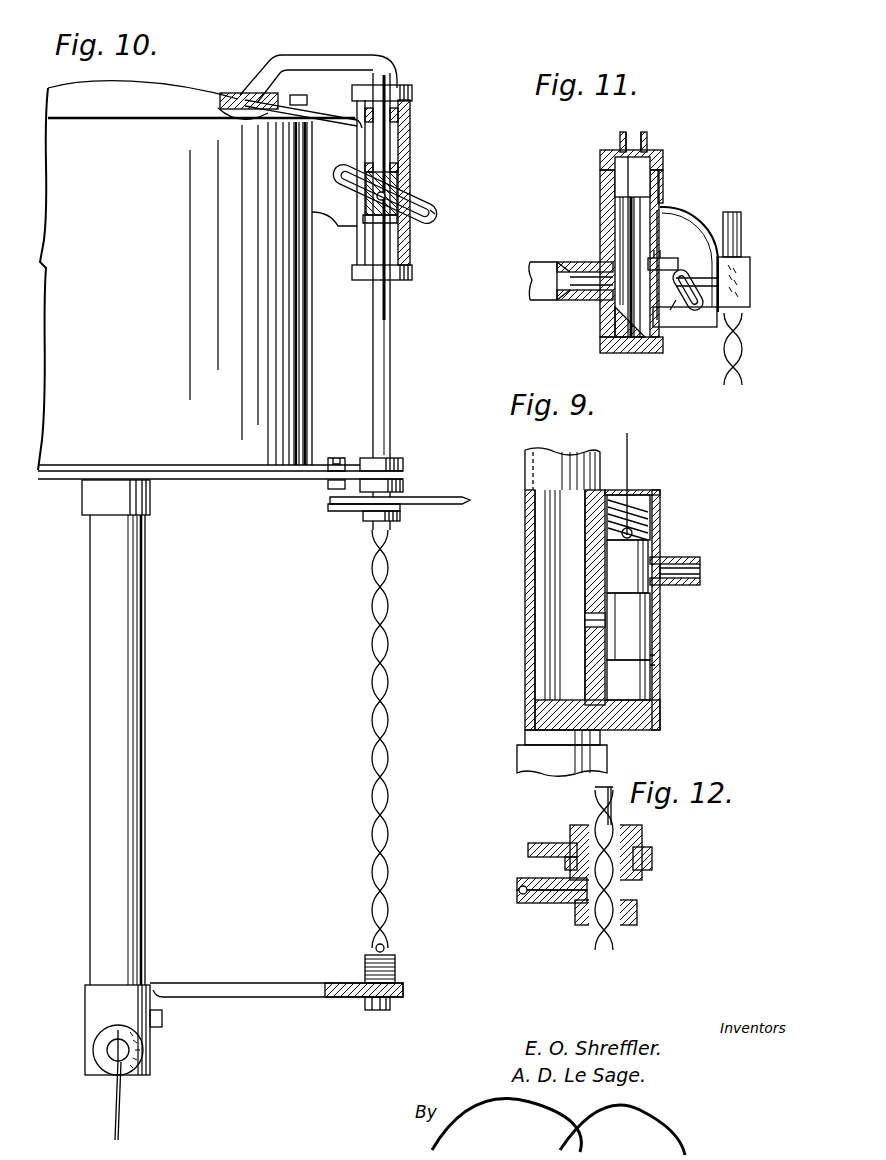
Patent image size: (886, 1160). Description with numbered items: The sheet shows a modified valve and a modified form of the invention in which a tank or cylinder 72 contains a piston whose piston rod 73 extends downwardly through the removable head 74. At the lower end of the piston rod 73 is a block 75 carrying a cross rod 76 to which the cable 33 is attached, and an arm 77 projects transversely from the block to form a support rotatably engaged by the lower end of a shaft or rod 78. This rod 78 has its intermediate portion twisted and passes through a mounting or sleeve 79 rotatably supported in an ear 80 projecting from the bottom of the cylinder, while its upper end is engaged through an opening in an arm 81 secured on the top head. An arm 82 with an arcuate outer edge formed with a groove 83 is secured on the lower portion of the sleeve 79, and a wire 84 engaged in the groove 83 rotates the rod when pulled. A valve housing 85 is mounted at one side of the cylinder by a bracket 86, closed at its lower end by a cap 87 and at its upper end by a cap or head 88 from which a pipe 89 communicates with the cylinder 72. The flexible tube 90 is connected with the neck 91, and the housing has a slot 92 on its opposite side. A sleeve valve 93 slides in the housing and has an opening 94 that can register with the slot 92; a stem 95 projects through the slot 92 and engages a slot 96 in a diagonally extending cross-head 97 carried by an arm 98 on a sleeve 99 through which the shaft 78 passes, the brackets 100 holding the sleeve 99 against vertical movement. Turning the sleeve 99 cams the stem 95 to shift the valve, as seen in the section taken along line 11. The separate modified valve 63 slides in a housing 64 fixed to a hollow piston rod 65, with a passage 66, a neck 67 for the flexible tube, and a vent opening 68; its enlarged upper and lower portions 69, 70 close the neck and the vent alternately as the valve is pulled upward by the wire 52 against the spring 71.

In FIG. 10, the section line 11 is at (397, 52).
In FIG. 10, the cable 33 is at (120, 1117).
In FIG. 9, the wire 52 is at (630, 452).
In FIG. 9, the valve 63 is at (627, 625).
In FIG. 9, the valve housing 64 is at (660, 528).
In FIG. 9, the piston rod 65 is at (543, 598).
In FIG. 9, the passage 66 is at (597, 618).
In FIG. 9, the neck 67 is at (694, 556).
In FIG. 9, the vent opening 68 is at (660, 655).
In FIG. 9, the upper portion of the valve 69 is at (610, 568).
In FIG. 9, the lower portion of the valve 70 is at (660, 688).
In FIG. 9, the spring 71 is at (650, 510).
In FIG. 10, the tank or cylinder 72 is at (250, 440).
In FIG. 10, the piston rod 73 is at (140, 817).
In FIG. 10, the removable head 74 is at (197, 482).
In FIG. 10, the block 75 is at (97, 1007).
In FIG. 10, the cross rod 76 is at (117, 1050).
In FIG. 10, the arm 77 is at (246, 983).
In FIG. 10, the shaft or rod 78 is at (377, 860).
In FIG. 11, the shaft or rod 78 is at (741, 228).
In FIG. 12, the shaft or rod 78 is at (615, 810).
In FIG. 10, the mounting or sleeve 79 is at (392, 457).
In FIG. 12, the mounting or sleeve 79 is at (643, 833).
In FIG. 10, the ear 80 is at (403, 477).
In FIG. 12, the ear 80 is at (547, 843).
In FIG. 10, the arm 81 is at (398, 113).
In FIG. 10, the arm 82 is at (360, 514).
In FIG. 12, the arm 82 is at (562, 905).
In FIG. 10, the groove 83 is at (340, 511).
In FIG. 12, the groove 83 is at (525, 880).
In FIG. 10, the wire 84 is at (437, 506).
In FIG. 12, the wire 84 is at (518, 893).
In FIG. 10, the valve housing 85 is at (411, 142).
In FIG. 11, the valve housing 85 is at (609, 182).
In FIG. 10, the bracket 86 is at (322, 228).
In FIG. 10, the cap 87 is at (412, 275).
In FIG. 10, the cap or head 88 is at (412, 91).
In FIG. 11, the cap or head 88 is at (663, 155).
In FIG. 10, the pipe 89 is at (300, 66).
In FIG. 11, the pipe 89 is at (648, 132).
In FIG. 11, the flexible tube 90 is at (543, 292).
In FIG. 11, the neck 91 is at (588, 283).
In FIG. 11, the slot 92 is at (660, 214).
In FIG. 11, the sleeve valve 93 is at (614, 236).
In FIG. 11, the opening 94 is at (665, 205).
In FIG. 11, the stem 95 is at (663, 257).
In FIG. 10, the slot 96 is at (417, 207).
In FIG. 11, the slot 96 is at (697, 314).
In FIG. 10, the cross-head 97 is at (436, 222).
In FIG. 11, the cross-head 97 is at (682, 310).
In FIG. 11, the arm 98 is at (703, 278).
In FIG. 10, the sleeve 99 is at (400, 174).
In FIG. 11, the sleeve 99 is at (748, 284).
In FIG. 10, the brackets 100 is at (393, 151).
In FIG. 11, the brackets 100 is at (700, 218).